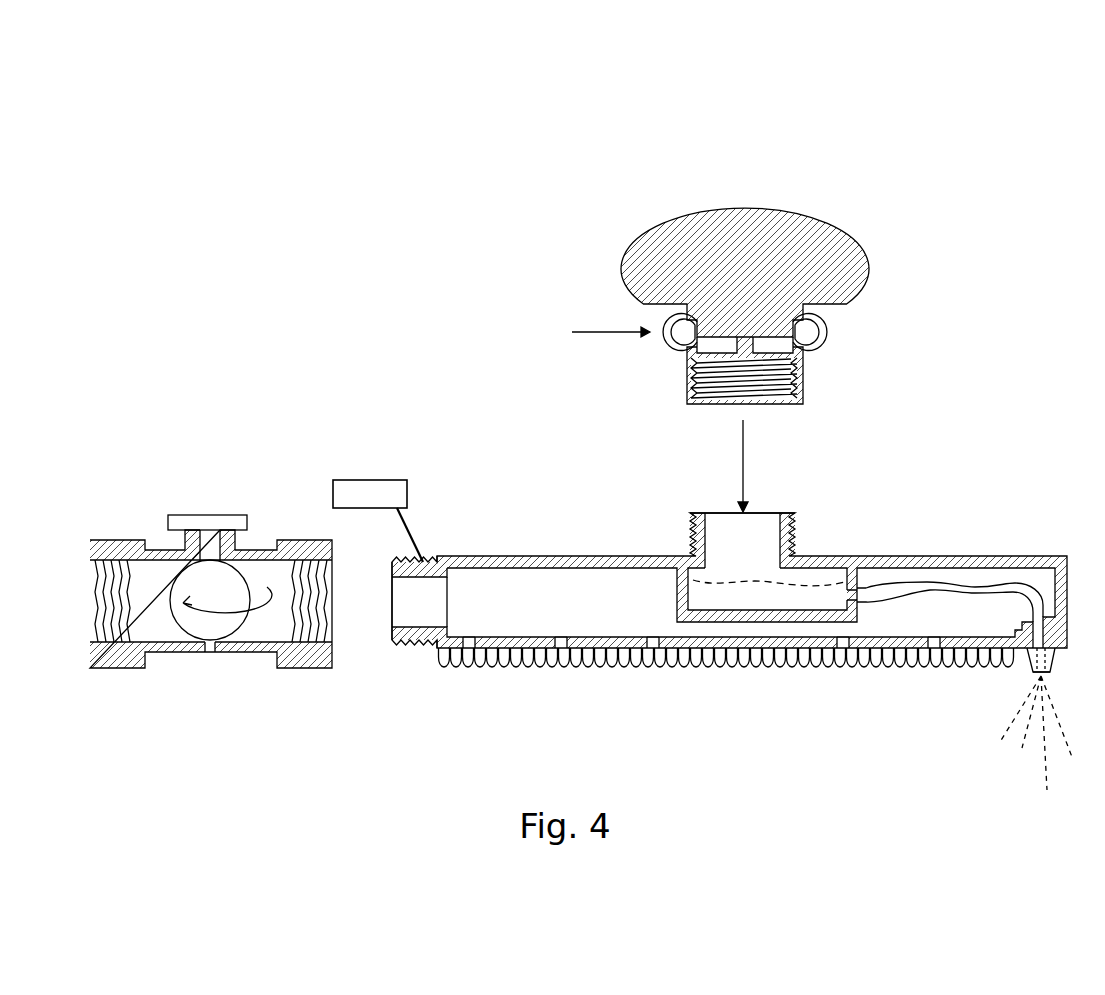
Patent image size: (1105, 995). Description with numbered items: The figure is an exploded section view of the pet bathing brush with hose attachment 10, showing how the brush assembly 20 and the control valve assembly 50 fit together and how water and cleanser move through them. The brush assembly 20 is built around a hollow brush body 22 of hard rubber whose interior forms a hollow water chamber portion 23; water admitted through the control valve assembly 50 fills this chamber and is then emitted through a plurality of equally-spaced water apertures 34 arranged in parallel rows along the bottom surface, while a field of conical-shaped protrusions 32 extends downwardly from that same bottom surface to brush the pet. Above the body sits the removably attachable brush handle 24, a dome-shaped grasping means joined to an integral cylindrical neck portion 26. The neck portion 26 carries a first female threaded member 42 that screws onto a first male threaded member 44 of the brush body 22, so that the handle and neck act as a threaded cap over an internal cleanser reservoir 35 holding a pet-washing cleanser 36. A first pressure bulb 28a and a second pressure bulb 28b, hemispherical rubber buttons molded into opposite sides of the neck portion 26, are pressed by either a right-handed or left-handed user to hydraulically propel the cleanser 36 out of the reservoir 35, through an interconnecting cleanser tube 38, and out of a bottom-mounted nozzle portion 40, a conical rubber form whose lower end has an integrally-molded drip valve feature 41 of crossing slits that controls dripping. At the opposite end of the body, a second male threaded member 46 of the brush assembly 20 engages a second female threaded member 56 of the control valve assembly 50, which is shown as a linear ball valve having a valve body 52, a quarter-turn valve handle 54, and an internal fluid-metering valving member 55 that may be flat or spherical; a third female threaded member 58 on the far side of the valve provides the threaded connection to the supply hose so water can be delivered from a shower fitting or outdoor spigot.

The pet bathing brush with hose attachment 10 is at (846, 149).
The brush assembly 20 is at (523, 437).
The brush body 22 is at (587, 553).
The water chamber portion 23 is at (577, 590).
The brush handle 24 is at (633, 246).
The neck portion 26 is at (689, 365).
The first pressure bulb 28a is at (668, 321).
The second pressure bulb 28b is at (825, 327).
The conical-shaped protrusions 32 is at (745, 650).
The water apertures 34 is at (555, 645).
The internal cleanser reservoir 35 is at (800, 588).
The cleanser 36 is at (705, 578).
The cleanser tube 38 is at (962, 583).
The nozzle portion 40 is at (1053, 662).
The drip valve feature 41 is at (1033, 672).
The first female threaded member 42 is at (796, 381).
The first male threaded member 44 is at (770, 513).
The second male threaded member 46 is at (410, 650).
The control valve assembly 50 is at (129, 484).
The valve body 52 is at (233, 647).
The quarter-turn valve handle 54 is at (228, 519).
The internal fluid-metering valving member 55 is at (225, 593).
The second female threaded member 56 is at (300, 667).
The third female threaded member 58 is at (118, 665).